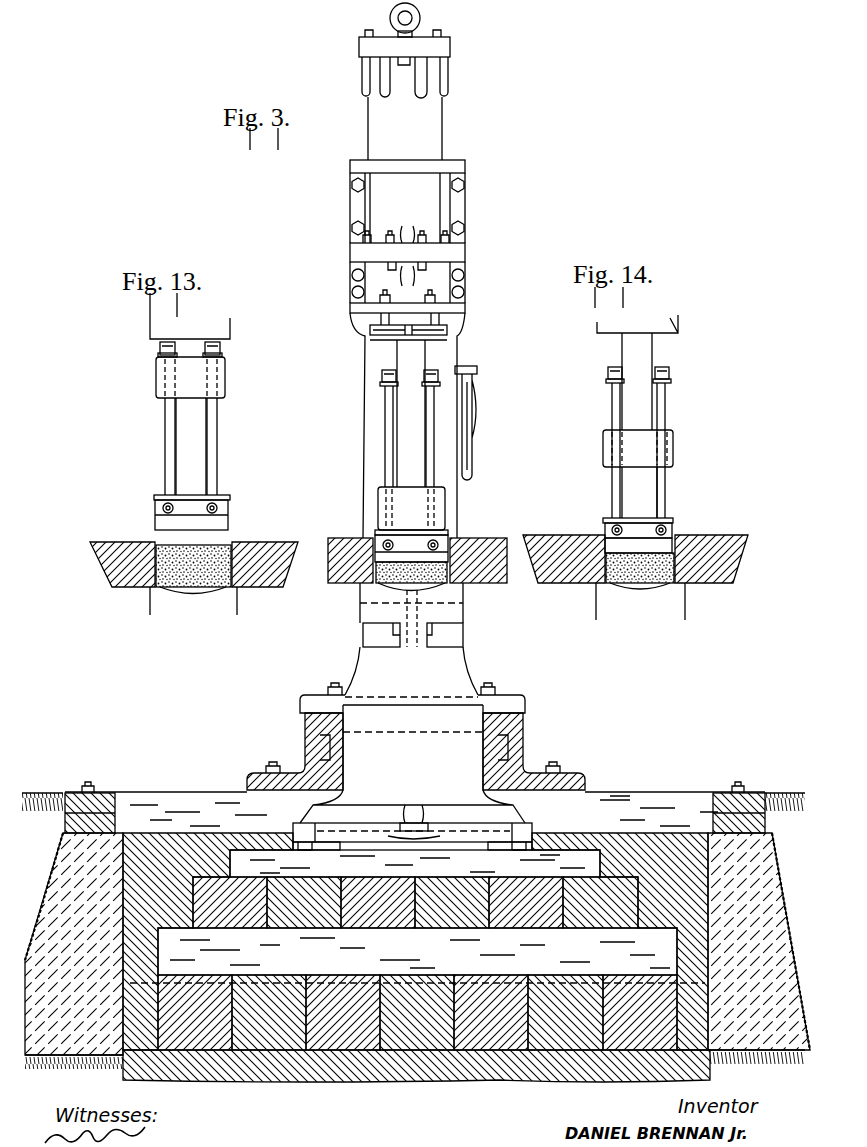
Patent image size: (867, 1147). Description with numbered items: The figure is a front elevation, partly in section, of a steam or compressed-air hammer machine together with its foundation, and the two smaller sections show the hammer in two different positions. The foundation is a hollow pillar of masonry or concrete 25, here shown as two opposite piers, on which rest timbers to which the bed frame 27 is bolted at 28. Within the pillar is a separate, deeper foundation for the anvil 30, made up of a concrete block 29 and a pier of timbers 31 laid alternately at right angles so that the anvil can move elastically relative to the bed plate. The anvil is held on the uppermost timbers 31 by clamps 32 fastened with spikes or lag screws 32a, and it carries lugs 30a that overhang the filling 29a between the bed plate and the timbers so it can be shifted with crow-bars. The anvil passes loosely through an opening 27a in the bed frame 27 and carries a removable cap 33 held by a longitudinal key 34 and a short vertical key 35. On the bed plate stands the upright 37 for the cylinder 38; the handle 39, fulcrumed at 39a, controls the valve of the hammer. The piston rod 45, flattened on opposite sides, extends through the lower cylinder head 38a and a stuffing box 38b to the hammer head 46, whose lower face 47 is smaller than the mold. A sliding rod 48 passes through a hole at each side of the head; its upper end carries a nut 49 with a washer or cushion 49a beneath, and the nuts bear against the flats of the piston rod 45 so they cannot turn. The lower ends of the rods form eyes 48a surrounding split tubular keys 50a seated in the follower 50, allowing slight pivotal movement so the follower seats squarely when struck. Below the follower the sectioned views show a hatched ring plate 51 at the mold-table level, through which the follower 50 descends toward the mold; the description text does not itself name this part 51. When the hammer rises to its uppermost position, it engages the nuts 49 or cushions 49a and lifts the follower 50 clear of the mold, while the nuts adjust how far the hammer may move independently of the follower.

In FIG. 3, the hollow pillar of masonry or concrete 25 is at (48, 874).
In FIG. 3, the bed frame 27 is at (515, 728).
In FIG. 3, the opening in the bed-plate 27a is at (480, 749).
In FIG. 3, the bolts 28 is at (560, 768).
In FIG. 3, the concrete layer or block 29 is at (388, 1080).
In FIG. 3, the filling 29a is at (637, 850).
In FIG. 3, the anvil 30 is at (412, 764).
In FIG. 3, the lugs or projections 30a is at (300, 826).
In FIG. 3, the timbers 31 is at (424, 885).
In FIG. 3, the clamps 32 is at (317, 850).
In FIG. 3, the spikes or lag screws 32a is at (535, 845).
In FIG. 3, the top or cap 33 is at (430, 628).
In FIG. 3, the longitudinal key 34 is at (418, 648).
In FIG. 3, the short vertical key 35 is at (398, 650).
In FIG. 3, the upright 37 is at (372, 410).
In FIG. 3, the cylinder 38 is at (407, 153).
In FIG. 3, the lower cylinder head 38a is at (372, 316).
In FIG. 3, the stuffing box 38b is at (447, 330).
In FIG. 14, the stuffing box 38b is at (678, 333).
In FIG. 3, the handle 39 is at (471, 458).
In FIG. 3, the fulcrum 39a is at (476, 371).
In FIG. 3, the piston rod 45 is at (411, 413).
In FIG. 14, the piston rod 45 is at (637, 381).
In FIG. 3, the hammer head 46 is at (411, 508).
In FIG. 13, the hammer head 46 is at (200, 378).
In FIG. 14, the hammer head 46 is at (638, 448).
In FIG. 13, the lower face of the hammer 47 is at (190, 402).
In FIG. 14, the lower face of the hammer 47 is at (645, 470).
In FIG. 3, the sliding rods 48 is at (388, 452).
In FIG. 13, the sliding rods 48 is at (214, 460).
In FIG. 14, the sliding rods 48 is at (665, 501).
In FIG. 3, the eyes 48a is at (448, 532).
In FIG. 3, the nuts 49 is at (438, 373).
In FIG. 13, the nuts 49 is at (222, 348).
In FIG. 14, the nuts 49 is at (669, 372).
In FIG. 3, the washers or cushions 49a is at (384, 378).
In FIG. 13, the washers or cushions 49a is at (160, 352).
In FIG. 14, the washers or cushions 49a is at (668, 383).
In FIG. 3, the follower 50 is at (411, 563).
In FIG. 13, the follower 50 is at (222, 520).
In FIG. 14, the follower 50 is at (607, 531).
In FIG. 14, the keys 50a is at (610, 521).
In FIG. 3, the ring plate 51 is at (485, 580).
In FIG. 13, the ring plate 51 is at (260, 580).
In FIG. 14, the ring plate 51 is at (635, 577).